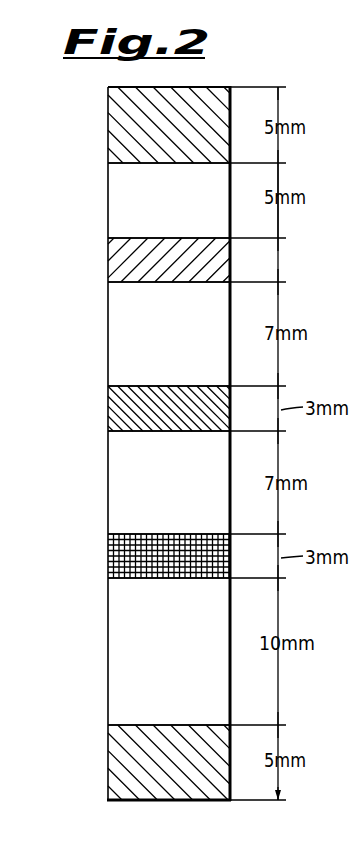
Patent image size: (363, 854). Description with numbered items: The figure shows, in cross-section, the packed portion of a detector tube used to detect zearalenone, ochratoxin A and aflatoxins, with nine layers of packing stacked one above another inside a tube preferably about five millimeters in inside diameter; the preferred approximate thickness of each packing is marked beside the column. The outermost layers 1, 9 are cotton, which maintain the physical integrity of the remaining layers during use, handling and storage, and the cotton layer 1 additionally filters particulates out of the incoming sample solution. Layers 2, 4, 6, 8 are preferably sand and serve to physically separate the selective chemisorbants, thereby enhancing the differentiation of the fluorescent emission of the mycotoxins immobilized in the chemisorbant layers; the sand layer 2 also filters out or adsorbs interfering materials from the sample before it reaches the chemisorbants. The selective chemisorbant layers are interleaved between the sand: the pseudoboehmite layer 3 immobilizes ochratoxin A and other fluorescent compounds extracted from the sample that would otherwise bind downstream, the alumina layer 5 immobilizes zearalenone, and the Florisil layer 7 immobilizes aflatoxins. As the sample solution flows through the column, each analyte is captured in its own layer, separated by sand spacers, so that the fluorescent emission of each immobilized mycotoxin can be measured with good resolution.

The cotton layer 1 is at (107, 116).
The sand layer 2 is at (107, 212).
The pseudoboehmite layer 3 is at (107, 265).
The sand layer 4 is at (107, 335).
The alumina layer 5 is at (107, 410).
The sand layer 6 is at (107, 490).
The Florisil layer 7 is at (107, 556).
The sand layer 8 is at (107, 632).
The cotton layer 9 is at (107, 760).